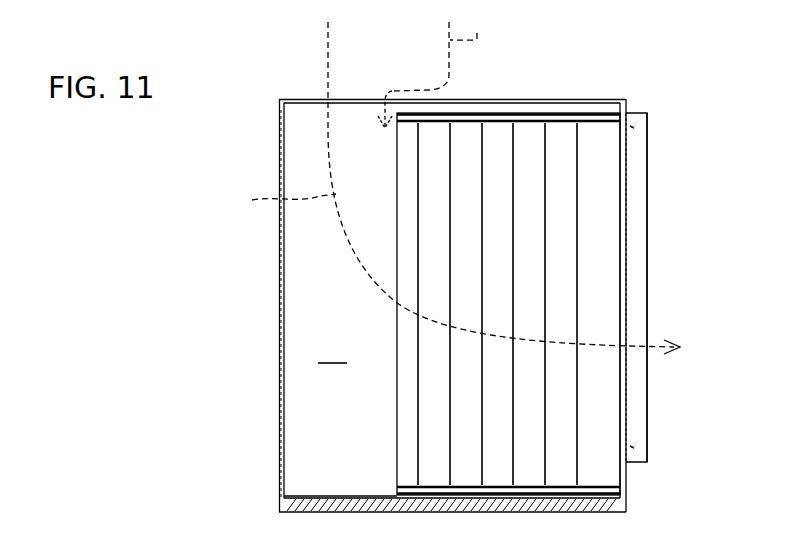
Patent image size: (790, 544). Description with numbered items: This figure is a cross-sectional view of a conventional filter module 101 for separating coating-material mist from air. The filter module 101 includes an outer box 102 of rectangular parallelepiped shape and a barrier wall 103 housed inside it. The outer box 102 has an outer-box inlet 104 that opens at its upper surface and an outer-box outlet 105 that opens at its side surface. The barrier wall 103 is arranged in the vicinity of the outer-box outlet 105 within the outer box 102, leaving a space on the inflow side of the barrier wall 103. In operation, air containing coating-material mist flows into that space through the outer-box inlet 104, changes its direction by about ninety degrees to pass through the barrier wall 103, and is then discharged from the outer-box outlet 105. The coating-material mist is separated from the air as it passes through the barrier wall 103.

The filter module 101 is at (239, 70).
The outer box 102 is at (281, 292).
The barrier wall 103 is at (560, 224).
The outer-box inlet 104 is at (363, 118).
The outer-box outlet 105 is at (622, 448).